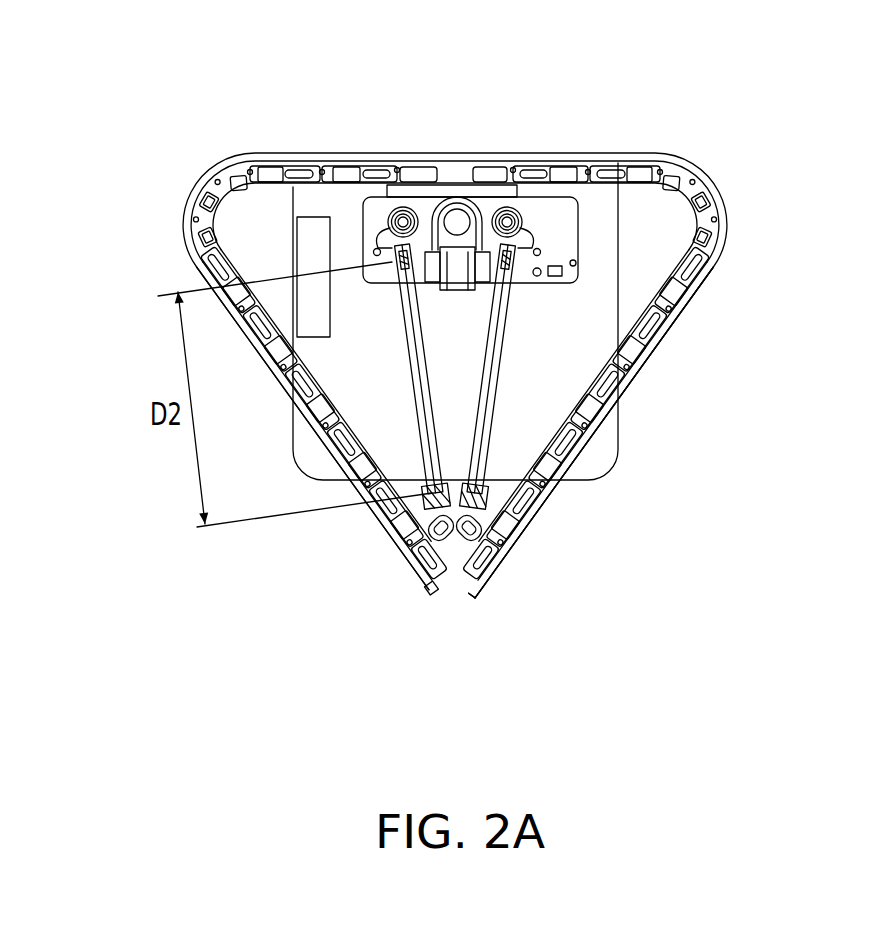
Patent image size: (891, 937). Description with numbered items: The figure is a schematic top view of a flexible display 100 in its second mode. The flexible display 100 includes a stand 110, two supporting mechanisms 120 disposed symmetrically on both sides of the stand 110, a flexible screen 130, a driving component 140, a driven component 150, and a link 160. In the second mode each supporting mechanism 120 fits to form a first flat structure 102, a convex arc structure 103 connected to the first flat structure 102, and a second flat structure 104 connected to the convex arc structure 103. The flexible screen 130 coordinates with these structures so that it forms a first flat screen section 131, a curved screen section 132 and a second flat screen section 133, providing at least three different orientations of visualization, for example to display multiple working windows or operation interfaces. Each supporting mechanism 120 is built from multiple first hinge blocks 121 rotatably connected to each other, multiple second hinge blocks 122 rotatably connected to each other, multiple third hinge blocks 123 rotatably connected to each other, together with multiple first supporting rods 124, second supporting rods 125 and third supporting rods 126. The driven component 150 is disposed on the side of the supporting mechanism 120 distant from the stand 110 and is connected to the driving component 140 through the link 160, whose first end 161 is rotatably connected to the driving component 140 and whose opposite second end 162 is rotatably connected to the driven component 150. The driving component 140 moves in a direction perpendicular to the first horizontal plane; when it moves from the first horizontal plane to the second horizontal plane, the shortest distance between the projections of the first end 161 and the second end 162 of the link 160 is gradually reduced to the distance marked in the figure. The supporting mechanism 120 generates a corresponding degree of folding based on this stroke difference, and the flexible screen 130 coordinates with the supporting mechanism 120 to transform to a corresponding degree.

The flexible display 100 is at (766, 780).
The first flat structure 102 is at (590, 235).
The convex arc structure 103 is at (655, 219).
The second flat structure 104 is at (567, 343).
The stand 110 is at (474, 182).
The supporting mechanism 120 is at (826, 473).
The first hinge blocks 121 is at (320, 172).
The second hinge blocks 122 is at (250, 170).
The third hinge blocks 123 is at (250, 313).
The first supporting rods 124 is at (270, 168).
The second supporting rods 125 is at (213, 183).
The third supporting rods 126 is at (207, 258).
The flexible screen 130 is at (516, 566).
The first flat screen section 131 is at (376, 157).
The curved screen section 132 is at (200, 187).
The second flat screen section 133 is at (332, 462).
The driving component 140 is at (392, 240).
The driven component 150 is at (436, 558).
The link 160 is at (550, 480).
The first end 161 is at (457, 215).
The second end 162 is at (465, 548).